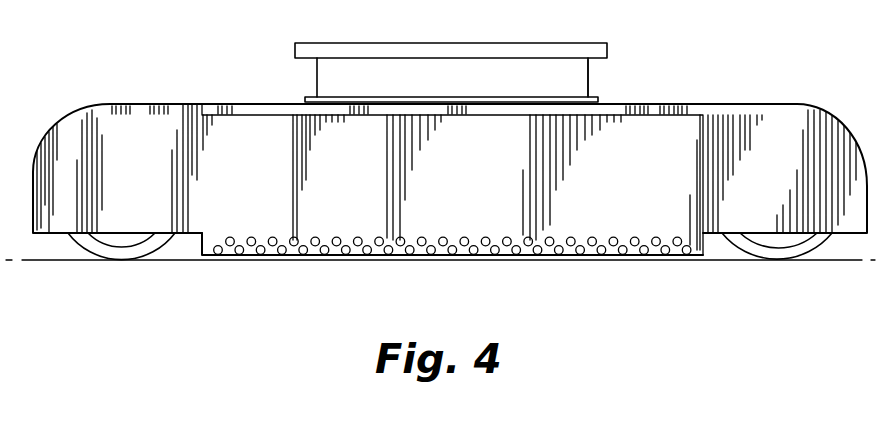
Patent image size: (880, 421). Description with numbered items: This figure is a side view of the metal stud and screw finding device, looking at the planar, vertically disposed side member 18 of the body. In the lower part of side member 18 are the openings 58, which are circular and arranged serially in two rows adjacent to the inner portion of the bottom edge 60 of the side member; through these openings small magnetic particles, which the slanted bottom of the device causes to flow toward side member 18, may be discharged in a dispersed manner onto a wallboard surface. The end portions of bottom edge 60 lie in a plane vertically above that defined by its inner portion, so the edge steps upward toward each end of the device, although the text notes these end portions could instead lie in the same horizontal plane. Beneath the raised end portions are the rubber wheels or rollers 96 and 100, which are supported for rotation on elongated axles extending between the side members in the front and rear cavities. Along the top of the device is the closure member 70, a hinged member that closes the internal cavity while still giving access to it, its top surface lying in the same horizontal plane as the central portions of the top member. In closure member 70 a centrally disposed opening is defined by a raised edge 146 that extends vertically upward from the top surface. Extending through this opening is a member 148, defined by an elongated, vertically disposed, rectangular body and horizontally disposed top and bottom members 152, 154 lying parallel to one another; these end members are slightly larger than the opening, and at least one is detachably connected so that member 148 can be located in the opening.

The side member 18 is at (110, 106).
The openings 58 is at (466, 240).
The bottom edge 60 is at (50, 234).
The closure member 70 is at (688, 109).
The rubber wheel 96 is at (113, 252).
The rubber wheel 100 is at (776, 262).
The raised edge 146 is at (300, 92).
The member 148 is at (523, 66).
The top member 152 is at (317, 73).
The bottom member 154 is at (588, 80).